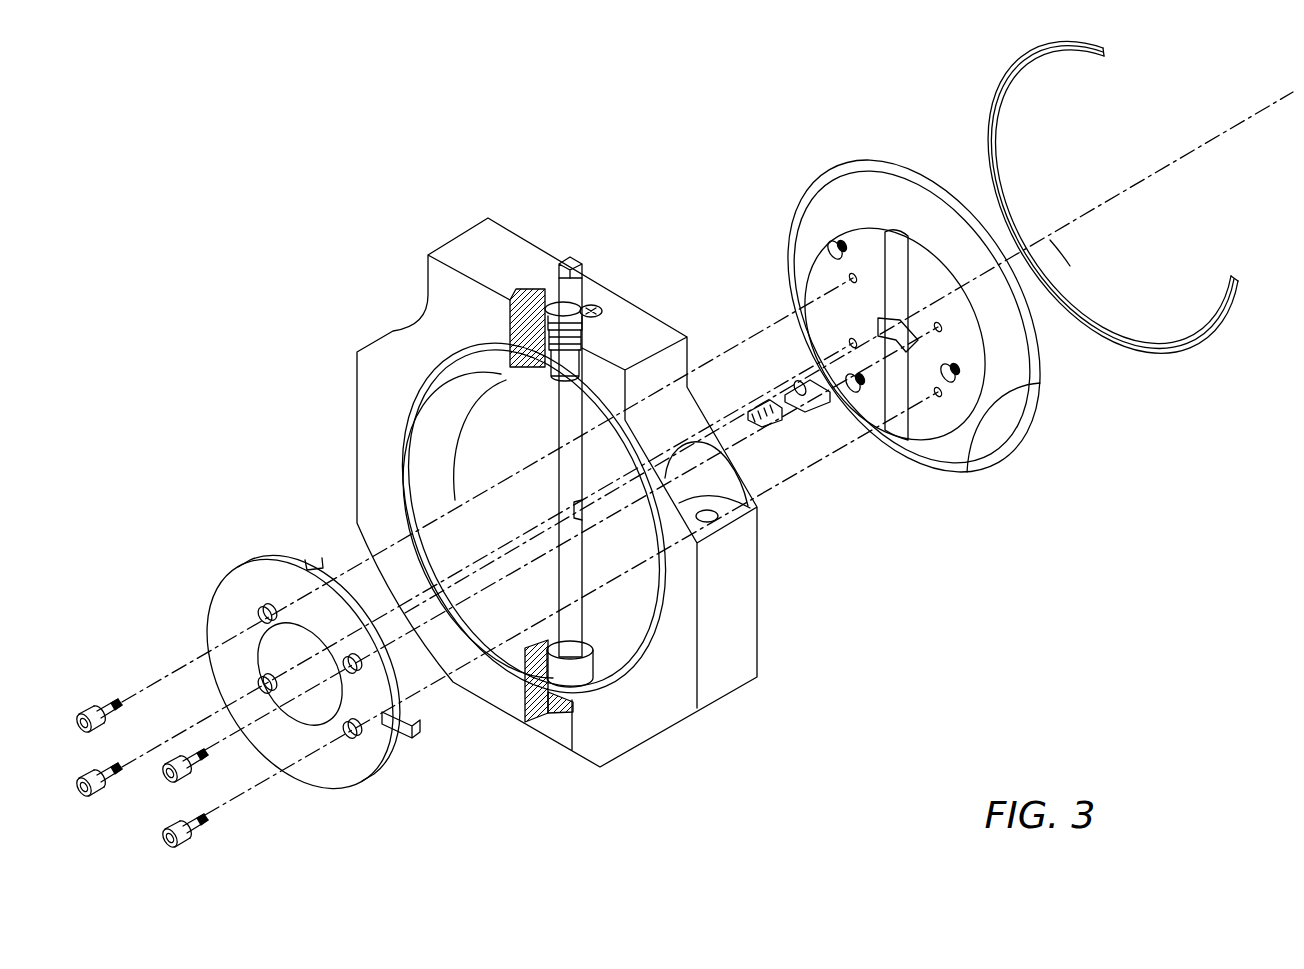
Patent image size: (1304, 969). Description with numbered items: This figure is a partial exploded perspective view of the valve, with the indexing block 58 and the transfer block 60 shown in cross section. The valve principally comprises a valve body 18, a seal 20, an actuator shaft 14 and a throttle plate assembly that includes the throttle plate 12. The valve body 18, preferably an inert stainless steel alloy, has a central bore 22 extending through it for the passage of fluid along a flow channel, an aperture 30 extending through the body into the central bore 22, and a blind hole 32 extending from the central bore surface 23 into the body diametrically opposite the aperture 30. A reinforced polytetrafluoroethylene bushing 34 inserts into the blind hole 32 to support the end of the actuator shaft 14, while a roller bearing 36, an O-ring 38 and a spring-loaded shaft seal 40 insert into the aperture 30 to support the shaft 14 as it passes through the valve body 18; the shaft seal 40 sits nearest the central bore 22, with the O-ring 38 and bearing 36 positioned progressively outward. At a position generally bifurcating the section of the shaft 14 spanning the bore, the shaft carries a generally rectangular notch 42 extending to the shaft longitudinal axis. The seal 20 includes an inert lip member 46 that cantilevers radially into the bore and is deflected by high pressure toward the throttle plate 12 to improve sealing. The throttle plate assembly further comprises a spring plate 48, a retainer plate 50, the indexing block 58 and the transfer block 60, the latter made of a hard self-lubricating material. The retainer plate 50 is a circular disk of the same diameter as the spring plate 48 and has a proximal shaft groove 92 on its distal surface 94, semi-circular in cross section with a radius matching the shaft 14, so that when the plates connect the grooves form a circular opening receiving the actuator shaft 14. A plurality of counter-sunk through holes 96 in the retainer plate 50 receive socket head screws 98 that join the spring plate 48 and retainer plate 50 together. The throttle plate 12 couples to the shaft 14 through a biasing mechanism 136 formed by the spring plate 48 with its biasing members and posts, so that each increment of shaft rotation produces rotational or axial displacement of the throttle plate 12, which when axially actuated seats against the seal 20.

The throttle plate 12 is at (805, 215).
The actuator shaft 14 is at (572, 474).
The valve body 18 is at (420, 266).
The seal 20 is at (990, 103).
The central bore 22 is at (450, 418).
The central bore surface 23 is at (492, 616).
The aperture 30 is at (587, 292).
The blind hole 32 is at (585, 653).
The bushing 34 is at (540, 713).
The roller bearing 36 is at (548, 330).
The O-ring 38 is at (535, 358).
The shaft seal 40 is at (558, 364).
The notch 42 is at (581, 509).
The lip member 46 is at (1060, 286).
The spring plate 48 is at (940, 430).
The retainer plate 50 is at (333, 765).
The indexing block 58 is at (825, 400).
The transfer block 60 is at (773, 417).
The proximal shaft groove 92 is at (323, 570).
The retainer plate distal surface 94 is at (273, 556).
The counter-sunk through holes 96 is at (258, 626).
The socket head screws 98 is at (100, 703).
The biasing mechanism 136 is at (988, 417).